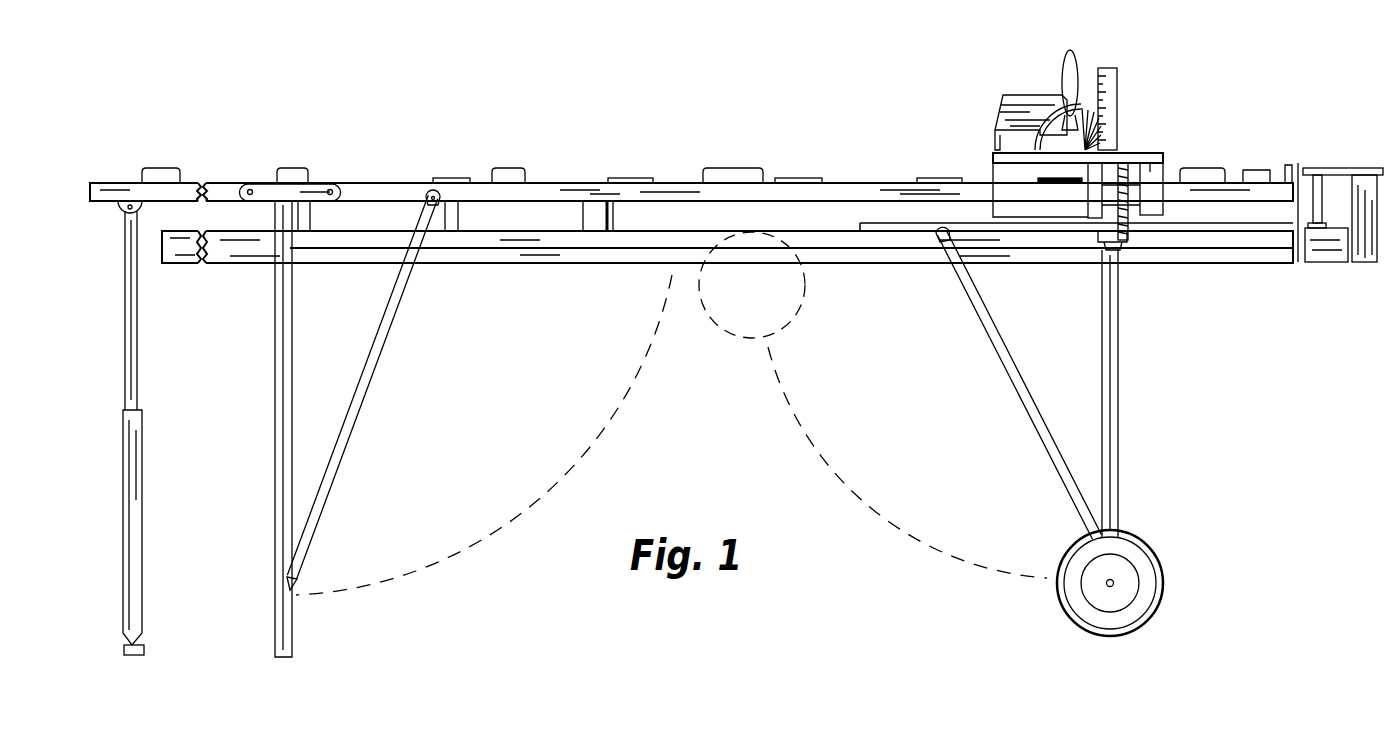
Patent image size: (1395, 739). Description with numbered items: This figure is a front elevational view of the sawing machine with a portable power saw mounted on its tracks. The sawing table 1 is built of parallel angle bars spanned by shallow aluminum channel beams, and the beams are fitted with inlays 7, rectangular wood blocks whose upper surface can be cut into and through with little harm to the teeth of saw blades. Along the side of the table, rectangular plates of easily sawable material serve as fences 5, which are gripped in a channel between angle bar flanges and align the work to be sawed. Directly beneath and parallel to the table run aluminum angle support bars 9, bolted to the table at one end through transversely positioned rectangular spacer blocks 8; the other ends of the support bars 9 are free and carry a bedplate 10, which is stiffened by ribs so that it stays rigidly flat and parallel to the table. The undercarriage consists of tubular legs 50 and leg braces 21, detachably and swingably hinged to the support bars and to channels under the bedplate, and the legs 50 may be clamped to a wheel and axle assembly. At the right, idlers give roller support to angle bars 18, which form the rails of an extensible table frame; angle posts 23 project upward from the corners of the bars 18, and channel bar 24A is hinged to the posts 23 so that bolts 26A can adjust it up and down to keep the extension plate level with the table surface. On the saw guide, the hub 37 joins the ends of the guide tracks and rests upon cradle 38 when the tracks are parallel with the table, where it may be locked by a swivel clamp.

The sawing table 1 is at (550, 170).
The fences 5 is at (152, 172).
The inlays 7 is at (455, 168).
The spacer blocks 8 is at (302, 215).
The angle support bars 9 is at (790, 245).
The bedplate 10 is at (925, 242).
The angle bars 18 is at (1323, 250).
The leg braces 21 is at (362, 412).
The angle posts 23 is at (1364, 255).
The channel bar 24A is at (1318, 167).
The bolts 26A is at (1322, 195).
The hub 37 is at (1096, 180).
The cradle 38 is at (1152, 176).
The tubular legs 50 is at (137, 346).